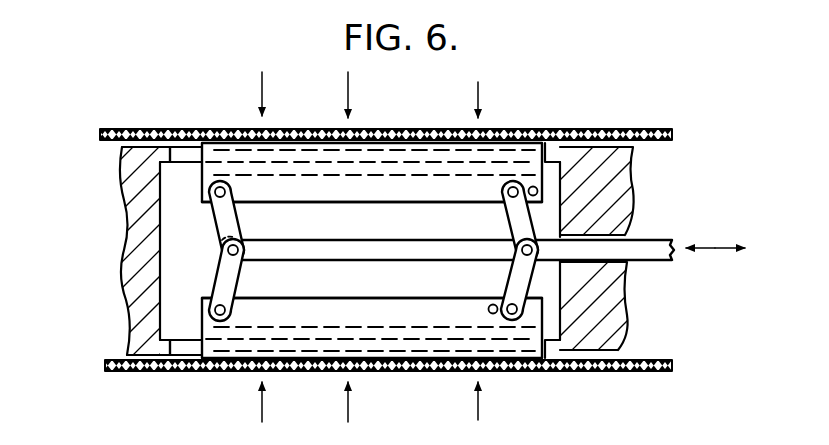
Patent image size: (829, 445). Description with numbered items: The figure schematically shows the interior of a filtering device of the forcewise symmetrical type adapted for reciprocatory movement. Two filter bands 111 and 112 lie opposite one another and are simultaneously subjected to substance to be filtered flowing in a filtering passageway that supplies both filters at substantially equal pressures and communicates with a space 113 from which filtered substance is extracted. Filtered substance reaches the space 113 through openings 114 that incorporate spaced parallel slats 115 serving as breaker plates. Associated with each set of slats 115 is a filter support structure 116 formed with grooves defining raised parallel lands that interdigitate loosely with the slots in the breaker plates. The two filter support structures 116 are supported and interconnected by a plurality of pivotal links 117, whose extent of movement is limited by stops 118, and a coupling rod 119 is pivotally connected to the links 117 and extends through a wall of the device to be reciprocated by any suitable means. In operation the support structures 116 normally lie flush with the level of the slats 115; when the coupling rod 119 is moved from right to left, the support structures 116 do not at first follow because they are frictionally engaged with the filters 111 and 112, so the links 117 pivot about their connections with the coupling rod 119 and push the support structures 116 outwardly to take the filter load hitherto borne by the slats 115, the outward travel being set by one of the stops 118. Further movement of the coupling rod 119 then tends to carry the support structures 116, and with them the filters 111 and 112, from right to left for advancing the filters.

The filter band 111 is at (425, 104).
The filter band 112 is at (386, 372).
The space 113 is at (170, 248).
The opening 114 is at (180, 168).
The slat 115 is at (178, 157).
The filter support structure 116 is at (338, 193).
The pivotal link 117 is at (234, 224).
The stop 118 is at (537, 192).
The coupling rod 119 is at (651, 258).